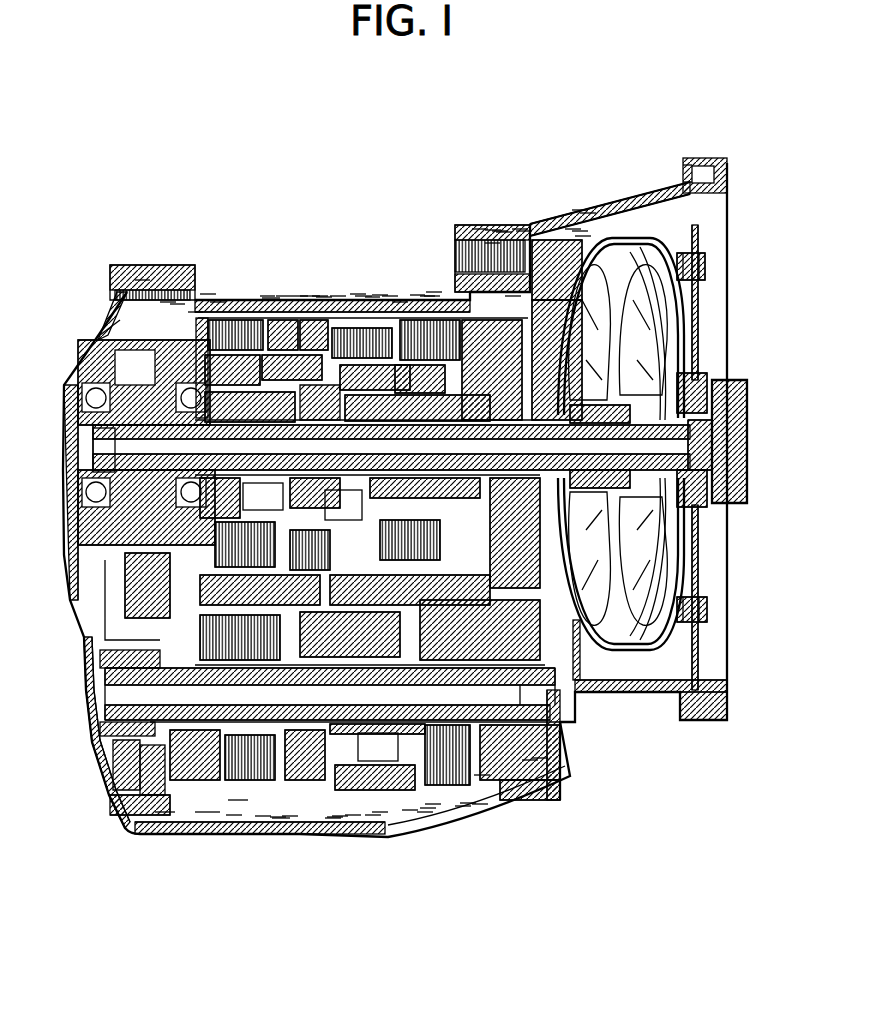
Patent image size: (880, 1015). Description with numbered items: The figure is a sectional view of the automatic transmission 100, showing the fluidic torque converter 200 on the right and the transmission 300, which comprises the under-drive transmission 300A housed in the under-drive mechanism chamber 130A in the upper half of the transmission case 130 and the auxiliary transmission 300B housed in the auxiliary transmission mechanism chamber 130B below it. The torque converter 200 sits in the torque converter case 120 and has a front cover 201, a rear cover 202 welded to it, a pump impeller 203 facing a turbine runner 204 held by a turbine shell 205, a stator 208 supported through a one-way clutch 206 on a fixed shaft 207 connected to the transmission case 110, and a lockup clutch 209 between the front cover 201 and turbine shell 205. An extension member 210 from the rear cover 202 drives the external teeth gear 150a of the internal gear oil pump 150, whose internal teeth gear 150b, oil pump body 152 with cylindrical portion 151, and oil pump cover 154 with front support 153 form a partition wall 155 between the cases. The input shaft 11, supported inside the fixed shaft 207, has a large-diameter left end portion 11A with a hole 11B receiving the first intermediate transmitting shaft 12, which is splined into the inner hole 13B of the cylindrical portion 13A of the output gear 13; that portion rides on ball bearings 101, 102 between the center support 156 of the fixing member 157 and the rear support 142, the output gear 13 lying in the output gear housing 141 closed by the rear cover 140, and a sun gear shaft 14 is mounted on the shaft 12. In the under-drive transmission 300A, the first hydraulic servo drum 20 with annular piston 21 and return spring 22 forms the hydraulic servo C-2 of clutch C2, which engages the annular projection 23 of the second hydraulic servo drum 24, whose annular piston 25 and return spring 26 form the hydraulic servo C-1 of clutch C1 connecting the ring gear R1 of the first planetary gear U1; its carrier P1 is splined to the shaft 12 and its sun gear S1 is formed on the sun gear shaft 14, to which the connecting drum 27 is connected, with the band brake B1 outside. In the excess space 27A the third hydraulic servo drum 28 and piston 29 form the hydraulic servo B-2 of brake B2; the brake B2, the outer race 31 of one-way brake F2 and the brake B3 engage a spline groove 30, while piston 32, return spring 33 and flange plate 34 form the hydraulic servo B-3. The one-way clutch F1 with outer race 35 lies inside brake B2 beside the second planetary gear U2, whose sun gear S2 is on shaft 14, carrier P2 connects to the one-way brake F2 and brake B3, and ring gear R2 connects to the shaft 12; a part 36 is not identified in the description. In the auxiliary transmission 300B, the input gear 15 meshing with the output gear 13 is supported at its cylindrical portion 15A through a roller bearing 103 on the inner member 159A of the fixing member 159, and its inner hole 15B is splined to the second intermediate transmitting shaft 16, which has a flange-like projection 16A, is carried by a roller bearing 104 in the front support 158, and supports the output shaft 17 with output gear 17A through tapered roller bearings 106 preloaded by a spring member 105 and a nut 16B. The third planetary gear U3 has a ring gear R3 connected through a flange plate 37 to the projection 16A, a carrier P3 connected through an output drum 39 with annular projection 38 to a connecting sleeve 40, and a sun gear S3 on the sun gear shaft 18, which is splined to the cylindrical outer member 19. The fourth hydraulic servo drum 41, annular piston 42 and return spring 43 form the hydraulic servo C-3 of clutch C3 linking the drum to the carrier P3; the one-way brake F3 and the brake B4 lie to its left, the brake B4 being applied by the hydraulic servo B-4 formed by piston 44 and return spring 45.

The input shaft 11 is at (647, 217).
The left end portion 11A is at (417, 293).
The leftward hole 11B is at (427, 293).
The first intermediate transmitting shaft 12 is at (310, 293).
The output gear 13 is at (135, 268).
The central cylindrical portion 13A is at (103, 375).
The inner hole 13B is at (93, 440).
The sun gear shaft 14 is at (300, 293).
The input gear 15 is at (100, 665).
The central cylindrical portion 15A is at (113, 747).
The inner hole 15B is at (107, 730).
The second intermediate transmitting shaft 16 is at (110, 700).
The flange-like projection 16A is at (428, 813).
The nut 16B is at (540, 760).
The output shaft 17 is at (463, 810).
The output gear 17A is at (480, 807).
The sun gear shaft 18 is at (353, 820).
The cylindrical outer member 19 is at (233, 820).
The first hydraulic servo drum 20 is at (503, 227).
The annular piston 21 is at (493, 227).
The return spring 22 is at (480, 227).
The annular projection 23 is at (487, 247).
The second hydraulic servo drum 24 is at (433, 290).
The annular piston 25 is at (432, 293).
The return spring 26 is at (390, 293).
The connecting drum 27 is at (400, 300).
The excess space 27A is at (380, 293).
The third hydraulic servo drum 28 is at (337, 293).
The piston 29 is at (320, 293).
The spline groove 30 is at (208, 292).
The outer race 31 is at (267, 293).
The piston 32 is at (168, 300).
The return spring 33 is at (177, 300).
The flange plate 34 is at (195, 310).
The outer race 35 is at (283, 293).
The one-way clutch race 36 is at (270, 293).
The flange plate 37 is at (425, 830).
The annular projection 38 is at (335, 820).
The output drum 39 is at (410, 813).
The connecting sleeve 40 is at (433, 807).
The fourth hydraulic servo drum 41 is at (263, 820).
The annular piston 42 is at (277, 820).
The return spring 43 is at (290, 820).
The piston 44 is at (162, 833).
The return spring 45 is at (237, 843).
The automatic transmission 100 is at (729, 222).
The ball bearing 101 is at (103, 337).
The ball bearing 102 is at (80, 393).
The roller bearing 103 is at (150, 745).
The roller bearing 104 is at (528, 780).
The spring member 105 is at (468, 807).
The tapered roller bearings 106 is at (482, 777).
The transmission case 110 is at (507, 217).
The torque converter case 120 is at (635, 694).
The transmission case 130 is at (292, 313).
The under-drive mechanism chamber 130A is at (372, 293).
The auxiliary transmission mechanism chamber 130B is at (340, 843).
The rear cover 140 is at (67, 413).
The output gear housing 141 is at (67, 487).
The rear support 142 is at (97, 532).
The internal gear oil pump 150 is at (553, 273).
The external teeth gear 150a is at (573, 227).
The internal teeth gear 150b is at (580, 227).
The cylindrical portion 151 is at (587, 210).
The oil pump body 152 is at (580, 207).
The front support 153 is at (513, 293).
The oil pump cover 154 is at (520, 227).
The partition wall 155 is at (523, 227).
The center support 156 is at (200, 315).
The fixing member 157 is at (143, 280).
The front support 158 is at (530, 763).
The fixing member 159 is at (117, 807).
The inner member 159A is at (207, 820).
The fluidic torque converter 200 is at (669, 214).
The front cover 201 is at (700, 318).
The rear cover 202 is at (637, 253).
The pump impeller 203 is at (642, 217).
The turbine runner 204 is at (645, 217).
The turbine shell 205 is at (687, 160).
The one-way clutch 206 is at (725, 340).
The fixed shaft 207 is at (690, 182).
The stator 208 is at (693, 162).
The direct connecting clutch 209 is at (676, 232).
The extension member 210 is at (583, 233).
The transmission 300 is at (93, 303).
The under-drive transmission 300A is at (363, 293).
The auxiliary transmission 300B is at (280, 820).
The band brake B1 is at (465, 290).
The multi-plate brake B2 is at (310, 315).
The multi-plate brake B3 is at (218, 300).
The multi-plate brake B4 is at (222, 820).
The hydraulic servo B-2 is at (323, 293).
The hydraulic servo B-3 is at (162, 300).
The hydraulic servo B-4 is at (155, 833).
The multi-plate clutch C1 is at (385, 293).
The multi-plate clutch C2 is at (478, 240).
The multi-plate clutch C3 is at (333, 833).
The hydraulic servo C-1 is at (443, 290).
The hydraulic servo C-2 is at (500, 227).
The hydraulic servo C-3 is at (273, 820).
The one-way clutch F1 is at (277, 300).
The one-way brake F2 is at (262, 307).
The one-way brake F3 is at (230, 820).
The carrier P1 is at (358, 290).
The carrier P2 is at (230, 293).
The carrier P3 is at (428, 812).
The ring gear R1 is at (342, 293).
The ring gear R2 is at (225, 293).
The ring gear R3 is at (373, 820).
The sun gear S1 is at (365, 300).
The sun gear S2 is at (240, 313).
The sun gear S3 is at (380, 830).
The first planetary gear U1 is at (415, 569).
The second planetary gear U2 is at (260, 569).
The third planetary gear U3 is at (377, 757).